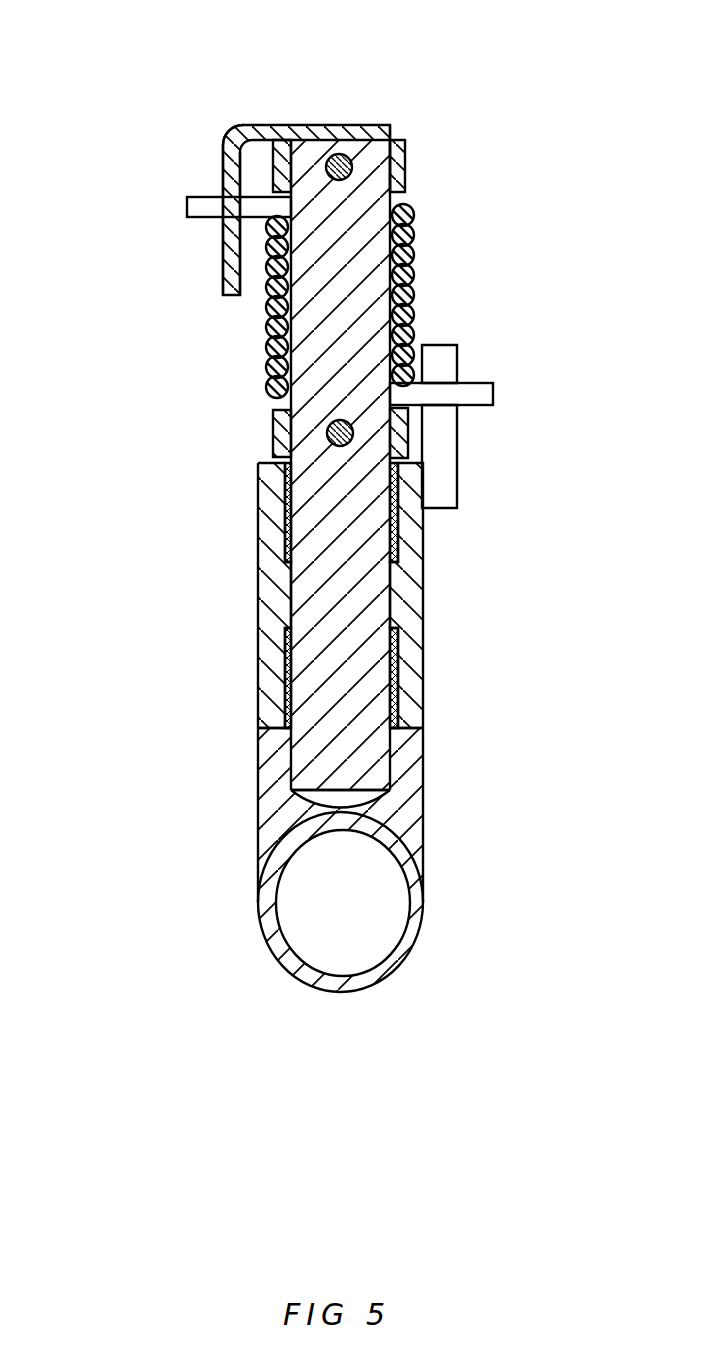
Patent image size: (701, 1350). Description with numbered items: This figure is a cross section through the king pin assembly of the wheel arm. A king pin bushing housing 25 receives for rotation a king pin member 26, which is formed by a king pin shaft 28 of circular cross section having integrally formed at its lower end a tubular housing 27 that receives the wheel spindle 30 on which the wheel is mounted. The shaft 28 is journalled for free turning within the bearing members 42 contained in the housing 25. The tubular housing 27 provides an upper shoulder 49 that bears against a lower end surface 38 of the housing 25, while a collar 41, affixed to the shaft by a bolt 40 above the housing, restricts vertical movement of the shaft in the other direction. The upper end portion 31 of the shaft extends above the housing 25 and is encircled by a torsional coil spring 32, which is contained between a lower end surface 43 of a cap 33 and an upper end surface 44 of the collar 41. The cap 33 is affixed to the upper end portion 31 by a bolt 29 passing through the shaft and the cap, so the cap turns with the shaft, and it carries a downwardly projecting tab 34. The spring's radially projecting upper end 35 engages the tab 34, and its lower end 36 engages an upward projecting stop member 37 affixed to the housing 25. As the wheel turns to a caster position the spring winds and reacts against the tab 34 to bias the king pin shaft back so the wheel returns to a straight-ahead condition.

The king pin bushing housing 25 is at (423, 642).
The king pin member 26 is at (398, 594).
The tubular housing 27 is at (423, 940).
The king pin shaft 28 is at (343, 743).
The bolt 29 is at (338, 152).
The wheel spindle 30 is at (332, 903).
The upper end portion 31 is at (362, 180).
The torsional coil spring 32 is at (413, 239).
The cap 33 is at (283, 118).
The tab 34 is at (225, 160).
The upper end of the spring 35 is at (183, 210).
The lower end of the spring 36 is at (492, 405).
The stop member 37 is at (460, 357).
The lower end surface 38 is at (262, 738).
The bolt 40 is at (322, 433).
The collar 41 is at (273, 447).
The bearing members 42 is at (283, 510).
The lower end surface 43 is at (393, 193).
The upper end surface 44 is at (263, 405).
The upper shoulder 49 is at (423, 712).